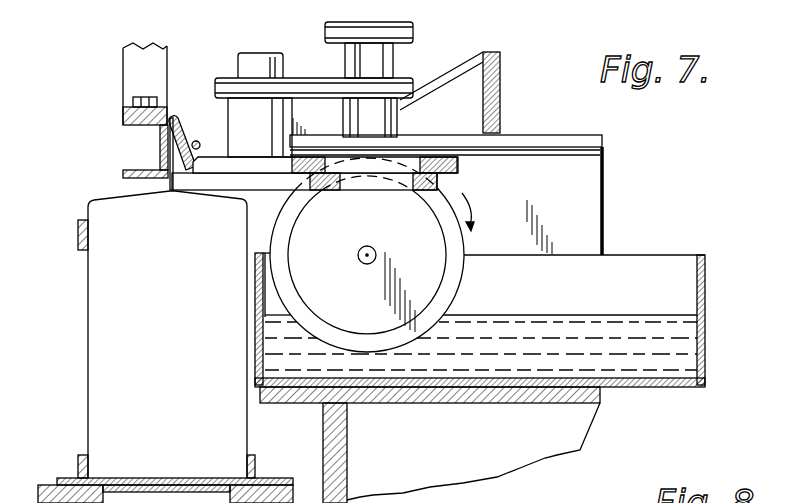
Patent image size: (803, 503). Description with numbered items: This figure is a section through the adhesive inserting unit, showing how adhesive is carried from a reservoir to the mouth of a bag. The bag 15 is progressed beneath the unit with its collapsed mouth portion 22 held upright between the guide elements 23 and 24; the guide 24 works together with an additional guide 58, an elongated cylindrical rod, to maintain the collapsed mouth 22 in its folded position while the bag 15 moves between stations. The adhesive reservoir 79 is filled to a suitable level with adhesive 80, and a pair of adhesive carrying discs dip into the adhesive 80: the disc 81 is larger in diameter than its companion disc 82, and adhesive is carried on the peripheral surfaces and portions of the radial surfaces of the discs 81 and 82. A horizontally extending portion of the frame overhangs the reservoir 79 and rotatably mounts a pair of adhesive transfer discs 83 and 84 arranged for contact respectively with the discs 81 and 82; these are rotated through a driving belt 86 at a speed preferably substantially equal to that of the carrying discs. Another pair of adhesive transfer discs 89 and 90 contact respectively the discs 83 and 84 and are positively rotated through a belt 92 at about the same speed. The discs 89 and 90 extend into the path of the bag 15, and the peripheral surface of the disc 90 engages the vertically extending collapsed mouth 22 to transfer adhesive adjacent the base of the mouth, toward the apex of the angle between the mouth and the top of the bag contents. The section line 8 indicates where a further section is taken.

The section line 8- 8 is at (115, 85).
The bag 15 is at (98, 313).
The collapsed mouth portion 22 is at (166, 160).
The guide element 23 is at (160, 127).
The guide element 24 is at (170, 143).
The additional guide 58 is at (196, 141).
The adhesive reservoir 79 is at (655, 258).
The adhesive 80 is at (566, 327).
The adhesive carrying disc 81 is at (440, 202).
The adhesive carrying disc 82 is at (432, 277).
The adhesive transfer disc 83 is at (372, 165).
The adhesive transfer disc 84 is at (353, 183).
The driving belt 86 is at (414, 34).
The adhesive transfer disc 89 is at (203, 168).
The adhesive transfer disc 90 is at (214, 183).
The belt 92 is at (311, 88).